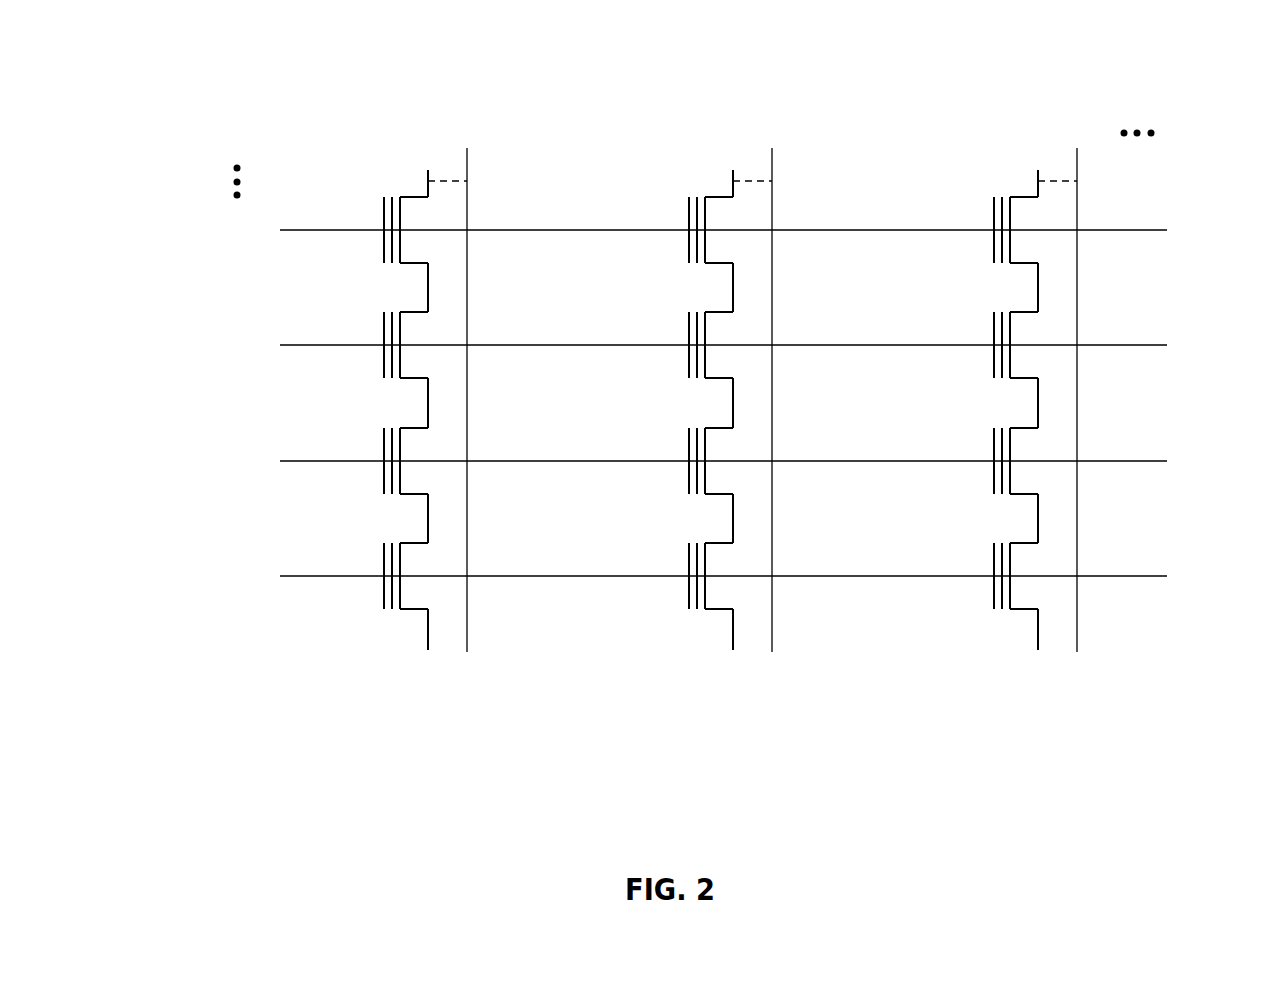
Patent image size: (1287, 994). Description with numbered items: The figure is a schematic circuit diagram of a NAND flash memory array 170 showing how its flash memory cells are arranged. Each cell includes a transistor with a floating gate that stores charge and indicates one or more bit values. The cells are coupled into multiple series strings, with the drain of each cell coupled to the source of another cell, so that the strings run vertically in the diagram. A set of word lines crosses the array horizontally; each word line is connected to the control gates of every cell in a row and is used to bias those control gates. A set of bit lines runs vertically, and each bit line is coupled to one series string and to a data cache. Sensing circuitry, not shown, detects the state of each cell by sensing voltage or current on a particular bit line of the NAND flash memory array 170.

The NAND flash memory array 170 is at (142, 92).